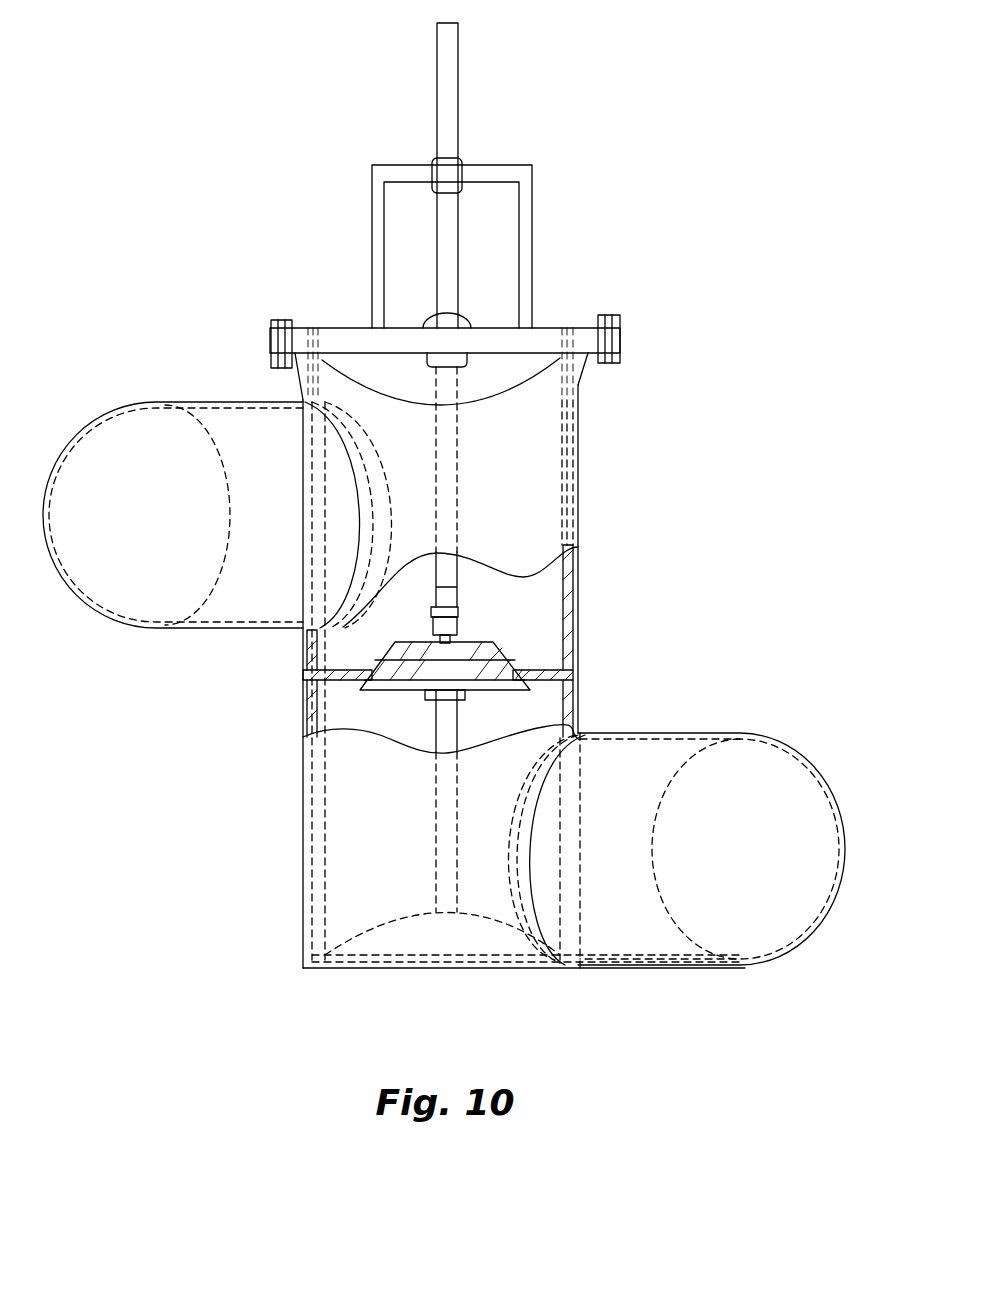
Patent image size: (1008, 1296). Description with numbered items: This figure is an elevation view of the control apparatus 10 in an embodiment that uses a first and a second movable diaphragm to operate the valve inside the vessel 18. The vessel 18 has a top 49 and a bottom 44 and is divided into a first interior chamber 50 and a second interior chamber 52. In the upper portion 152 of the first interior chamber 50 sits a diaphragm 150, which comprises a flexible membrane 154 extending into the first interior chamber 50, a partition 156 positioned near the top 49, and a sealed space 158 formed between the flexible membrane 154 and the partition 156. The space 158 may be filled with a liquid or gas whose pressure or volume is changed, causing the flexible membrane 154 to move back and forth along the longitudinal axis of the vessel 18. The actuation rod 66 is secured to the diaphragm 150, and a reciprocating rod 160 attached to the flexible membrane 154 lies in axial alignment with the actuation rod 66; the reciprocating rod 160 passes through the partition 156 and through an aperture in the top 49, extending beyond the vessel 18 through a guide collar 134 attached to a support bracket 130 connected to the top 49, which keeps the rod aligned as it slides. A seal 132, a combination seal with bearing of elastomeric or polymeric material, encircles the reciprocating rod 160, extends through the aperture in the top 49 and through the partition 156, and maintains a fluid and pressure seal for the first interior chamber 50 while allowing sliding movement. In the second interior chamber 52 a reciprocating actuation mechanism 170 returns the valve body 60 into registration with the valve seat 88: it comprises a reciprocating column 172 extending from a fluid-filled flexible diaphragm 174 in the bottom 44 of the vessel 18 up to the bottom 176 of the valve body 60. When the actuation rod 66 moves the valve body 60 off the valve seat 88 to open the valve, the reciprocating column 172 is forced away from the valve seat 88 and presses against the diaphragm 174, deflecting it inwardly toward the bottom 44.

The control apparatus 10 is at (790, 567).
The vessel 18 is at (581, 502).
The bottom of the vessel 44 is at (479, 968).
The top of the vessel 49 is at (342, 327).
The first interior chamber 50 is at (570, 575).
The second interior chamber 52 is at (375, 722).
The valve body 60 is at (488, 643).
The actuation rod 66 is at (456, 528).
The valve seat 88 is at (550, 682).
The support bracket 130 is at (372, 222).
The seal 132 is at (463, 319).
The guide collar 134 is at (452, 173).
The diaphragm 150 is at (396, 400).
The upper portion of the first interior chamber 152 is at (301, 393).
The flexible membrane 154 is at (490, 374).
The partition 156 is at (548, 340).
The sealed space 158 is at (542, 368).
The reciprocating rod 160 is at (448, 92).
The reciprocating actuation mechanism 170 is at (402, 868).
The reciprocating column 172 is at (445, 825).
The flexible diaphragm 174 is at (386, 935).
The bottom of the valve body 176 is at (485, 700).